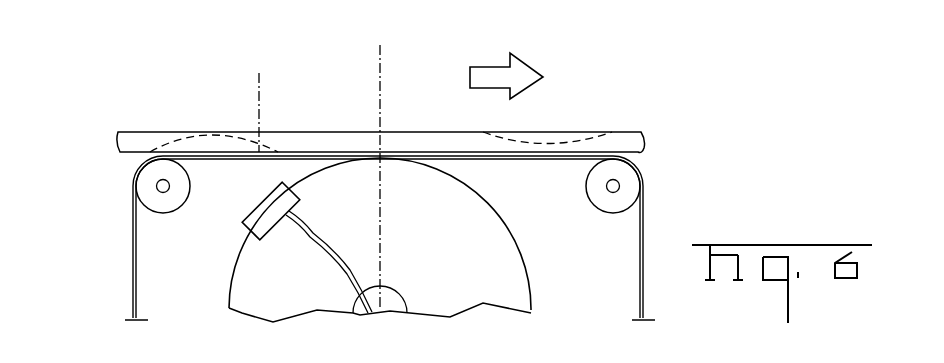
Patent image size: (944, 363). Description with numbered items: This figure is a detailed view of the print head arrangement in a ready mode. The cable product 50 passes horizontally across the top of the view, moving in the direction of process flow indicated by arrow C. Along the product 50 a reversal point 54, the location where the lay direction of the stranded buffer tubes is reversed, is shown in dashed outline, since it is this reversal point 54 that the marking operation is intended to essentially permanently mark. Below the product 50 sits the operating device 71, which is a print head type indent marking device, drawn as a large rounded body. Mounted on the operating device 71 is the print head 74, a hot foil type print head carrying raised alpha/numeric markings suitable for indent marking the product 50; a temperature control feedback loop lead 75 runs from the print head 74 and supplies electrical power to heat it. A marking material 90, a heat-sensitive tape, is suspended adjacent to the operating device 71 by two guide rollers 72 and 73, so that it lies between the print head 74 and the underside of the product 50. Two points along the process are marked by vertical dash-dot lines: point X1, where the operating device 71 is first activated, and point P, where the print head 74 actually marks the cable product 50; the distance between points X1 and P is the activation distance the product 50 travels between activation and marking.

The product 50 is at (333, 134).
The reversal point 54 is at (209, 136).
The operating device 71 is at (449, 296).
The guide roller 72 is at (166, 207).
The guide roller 73 is at (593, 185).
The print head 74 is at (253, 209).
The temperature control feedback loop lead 75 is at (332, 250).
The marking material 90 is at (133, 224).
The point X1 is at (257, 92).
The point P is at (381, 92).
The arrow C is at (490, 65).